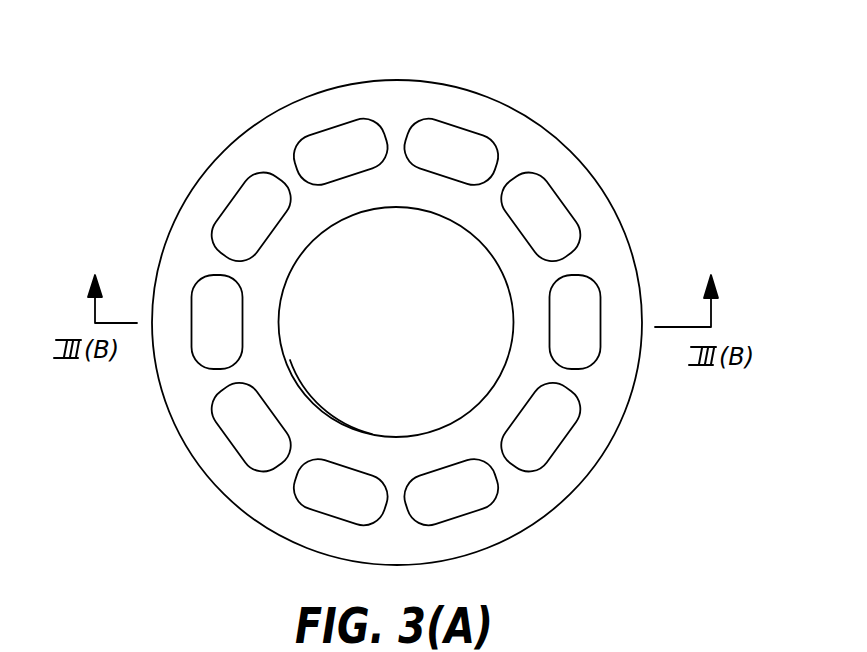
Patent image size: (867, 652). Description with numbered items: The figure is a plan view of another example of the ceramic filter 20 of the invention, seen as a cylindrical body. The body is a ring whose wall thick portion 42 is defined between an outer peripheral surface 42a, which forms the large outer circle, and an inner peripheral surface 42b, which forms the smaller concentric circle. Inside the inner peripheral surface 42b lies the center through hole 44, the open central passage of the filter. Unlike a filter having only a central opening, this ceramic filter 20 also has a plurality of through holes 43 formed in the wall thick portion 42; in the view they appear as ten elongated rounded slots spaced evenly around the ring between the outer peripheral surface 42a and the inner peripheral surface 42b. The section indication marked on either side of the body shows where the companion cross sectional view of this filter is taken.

The ceramic filter 20 is at (434, 282).
The wall thick portion 42 is at (455, 110).
The outer peripheral surface 42a is at (537, 123).
The inner peripheral surface 42b is at (353, 429).
The through holes 43 is at (542, 447).
The center through hole 44 is at (338, 275).